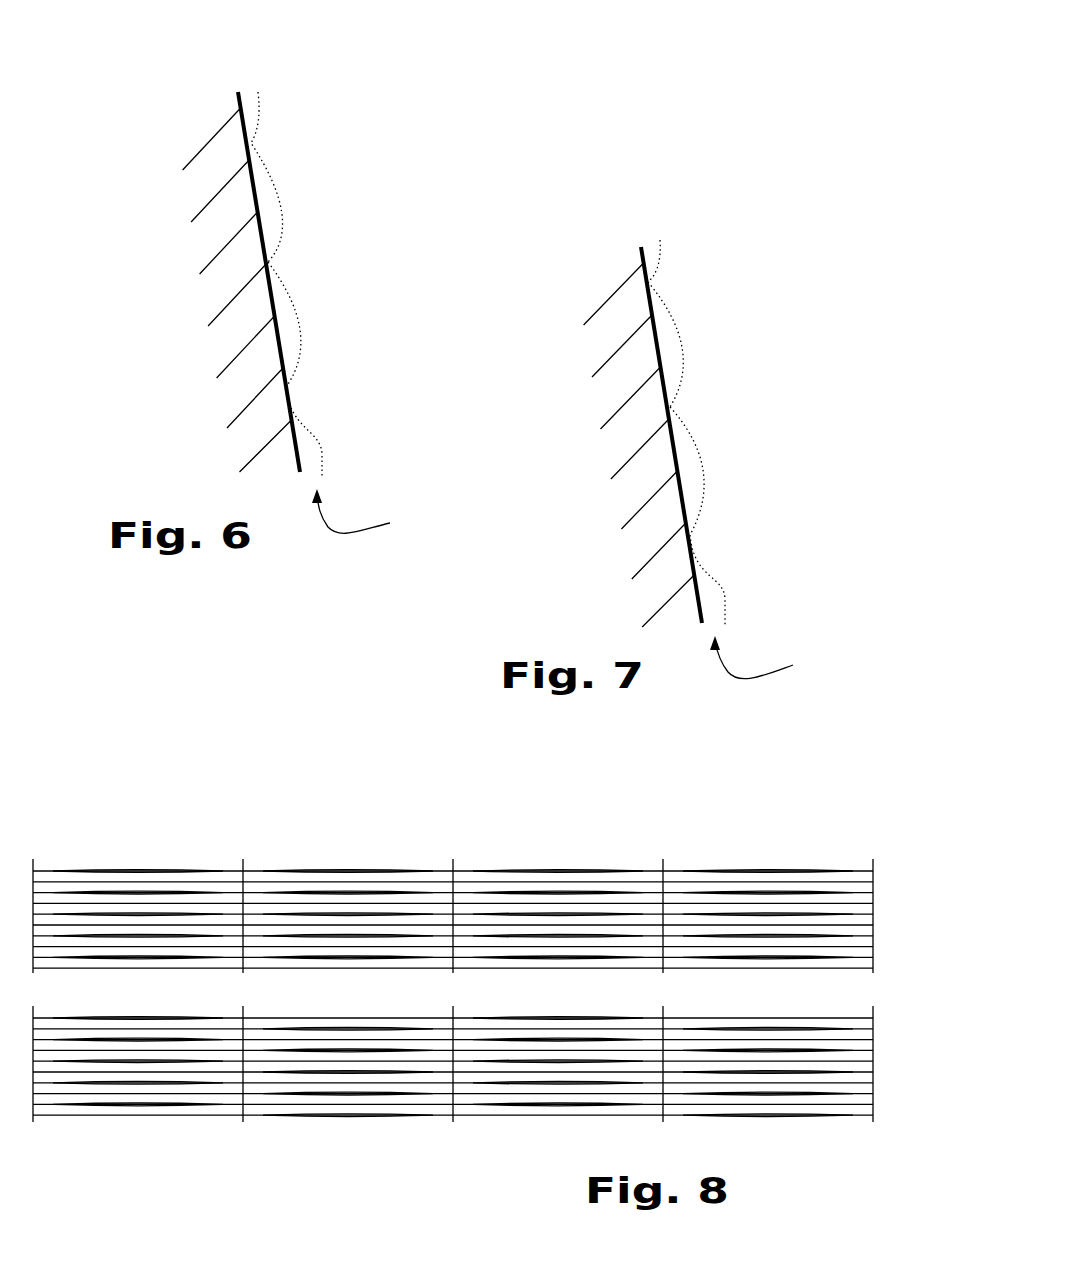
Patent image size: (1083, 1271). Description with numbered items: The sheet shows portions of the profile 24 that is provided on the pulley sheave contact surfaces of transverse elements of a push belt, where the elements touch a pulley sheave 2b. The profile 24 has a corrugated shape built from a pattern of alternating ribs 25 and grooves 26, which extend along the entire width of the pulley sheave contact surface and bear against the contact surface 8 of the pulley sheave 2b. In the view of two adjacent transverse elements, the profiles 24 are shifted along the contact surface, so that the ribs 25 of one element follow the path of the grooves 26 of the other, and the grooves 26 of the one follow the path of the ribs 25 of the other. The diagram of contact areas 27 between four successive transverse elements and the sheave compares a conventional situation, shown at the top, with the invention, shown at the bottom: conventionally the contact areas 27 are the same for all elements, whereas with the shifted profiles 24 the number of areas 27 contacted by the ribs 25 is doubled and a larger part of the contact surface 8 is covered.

In FIG. 6, the pulley sheave 2b is at (207, 158).
In FIG. 7, the pulley sheave 2b is at (608, 313).
In FIG. 6, the contact surface of the pulley sheave 8 is at (282, 348).
In FIG. 7, the contact surface of the pulley sheave 8 is at (680, 437).
In FIG. 6, the ribs 25 is at (255, 145).
In FIG. 7, the ribs 25 is at (655, 293).
In FIG. 6, the grooves 26 is at (272, 210).
In FIG. 7, the grooves 26 is at (697, 482).
In FIG. 6, the profile 24 is at (368, 511).
In FIG. 7, the profile 24 is at (767, 657).
In FIG. 8, the contact areas 27 is at (142, 872).